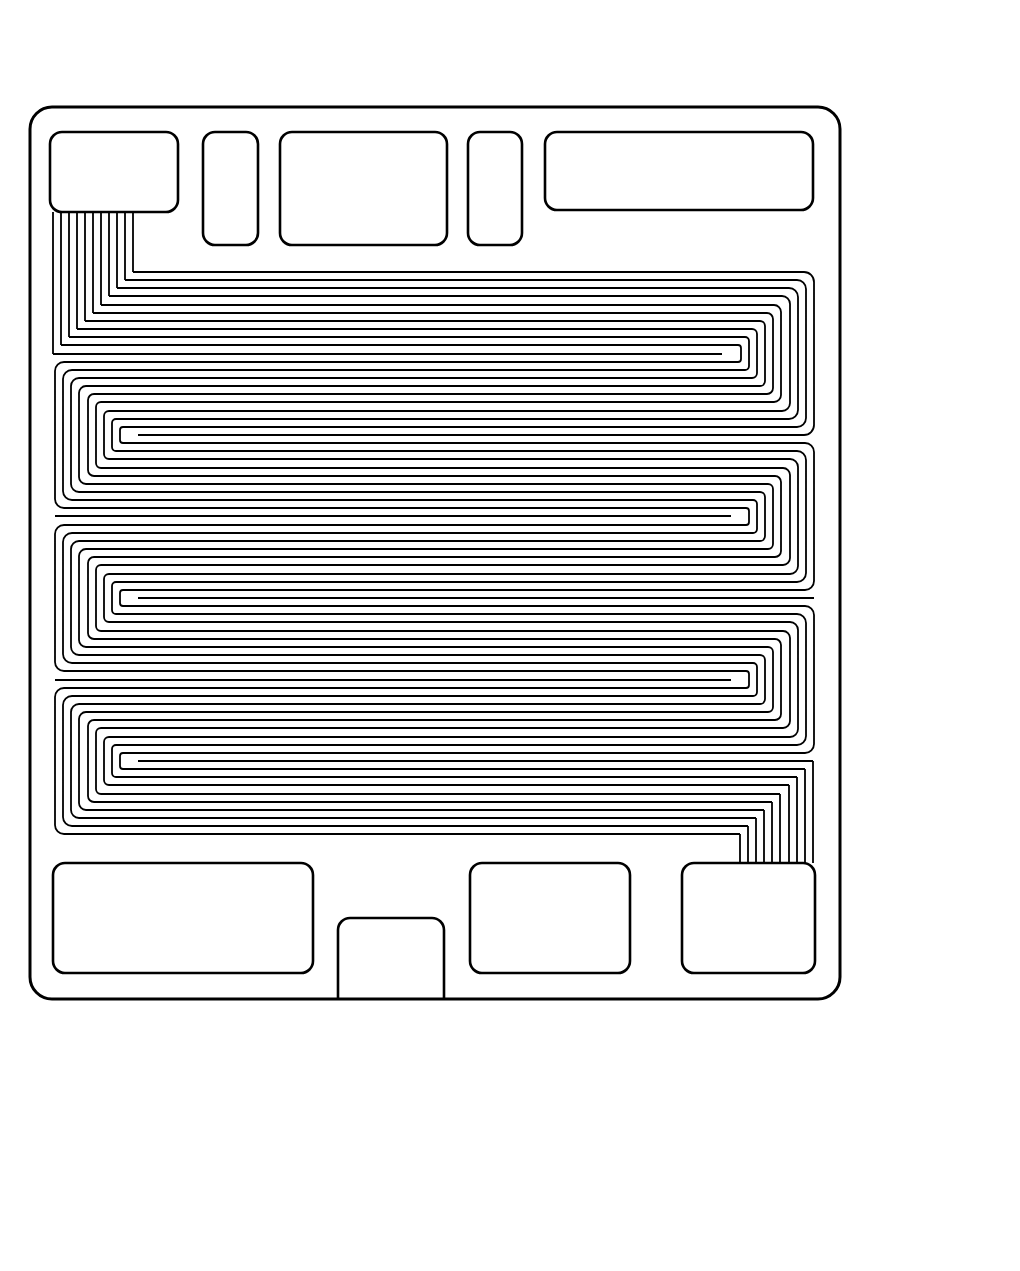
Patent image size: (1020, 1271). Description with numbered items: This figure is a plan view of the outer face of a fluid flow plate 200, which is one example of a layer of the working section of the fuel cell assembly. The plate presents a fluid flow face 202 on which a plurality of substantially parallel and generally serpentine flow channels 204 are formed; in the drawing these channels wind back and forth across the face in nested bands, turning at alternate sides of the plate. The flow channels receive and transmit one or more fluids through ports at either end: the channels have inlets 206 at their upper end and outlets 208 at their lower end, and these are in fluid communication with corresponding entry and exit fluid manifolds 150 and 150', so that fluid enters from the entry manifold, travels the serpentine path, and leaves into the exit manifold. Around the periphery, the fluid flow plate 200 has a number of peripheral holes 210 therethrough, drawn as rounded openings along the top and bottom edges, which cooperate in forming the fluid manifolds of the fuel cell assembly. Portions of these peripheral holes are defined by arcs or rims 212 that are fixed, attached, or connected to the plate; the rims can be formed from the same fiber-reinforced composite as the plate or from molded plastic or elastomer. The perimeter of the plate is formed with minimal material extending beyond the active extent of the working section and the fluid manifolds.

The fluid flow plate 200 is at (618, 67).
The fluid flow face 202 is at (803, 243).
The flow channels 204 is at (824, 325).
The inlets 206 is at (100, 198).
The outlets 208 is at (762, 878).
The peripheral holes 210 is at (612, 180).
The rims 212 is at (716, 127).
The fluid manifold 150 is at (125, 126).
The fluid manifold 150' is at (777, 970).